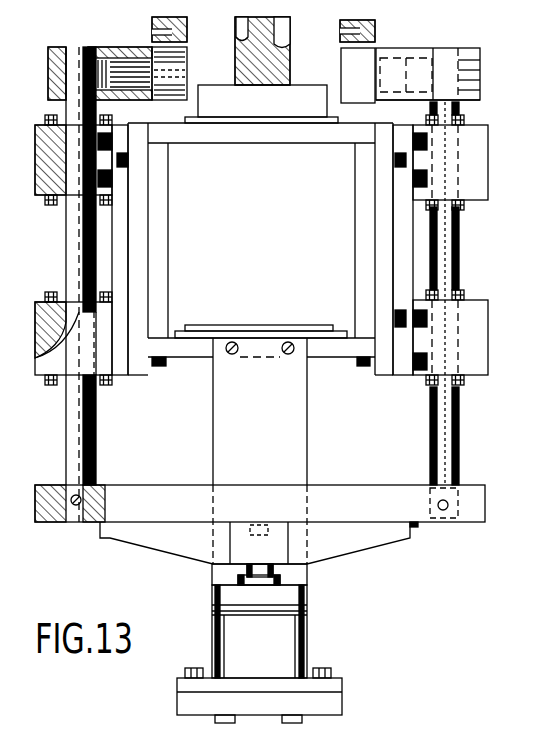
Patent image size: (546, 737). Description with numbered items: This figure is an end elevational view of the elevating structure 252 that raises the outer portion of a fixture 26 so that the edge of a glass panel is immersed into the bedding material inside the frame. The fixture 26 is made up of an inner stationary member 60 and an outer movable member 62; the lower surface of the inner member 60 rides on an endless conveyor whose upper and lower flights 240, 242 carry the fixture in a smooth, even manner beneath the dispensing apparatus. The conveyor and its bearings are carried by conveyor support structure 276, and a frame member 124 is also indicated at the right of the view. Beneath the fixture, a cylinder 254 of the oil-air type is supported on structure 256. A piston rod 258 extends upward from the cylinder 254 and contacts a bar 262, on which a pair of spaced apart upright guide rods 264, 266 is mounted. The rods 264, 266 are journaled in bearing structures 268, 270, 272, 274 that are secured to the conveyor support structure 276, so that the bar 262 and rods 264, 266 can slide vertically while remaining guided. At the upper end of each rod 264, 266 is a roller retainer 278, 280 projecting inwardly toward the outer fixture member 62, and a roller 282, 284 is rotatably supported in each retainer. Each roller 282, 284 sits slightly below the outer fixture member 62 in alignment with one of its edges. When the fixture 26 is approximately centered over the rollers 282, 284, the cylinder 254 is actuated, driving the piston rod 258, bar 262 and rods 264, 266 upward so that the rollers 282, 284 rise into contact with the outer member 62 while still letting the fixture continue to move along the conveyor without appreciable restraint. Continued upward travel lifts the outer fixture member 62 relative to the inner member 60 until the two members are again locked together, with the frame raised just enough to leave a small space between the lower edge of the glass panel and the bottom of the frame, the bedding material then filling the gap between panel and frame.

The fixture 26 is at (386, 40).
The inner stationary member 60 is at (289, 74).
The outer movable member 62 is at (151, 25).
The frame member 124 is at (536, 175).
The upper flight 240 is at (257, 123).
The lower flight 242 is at (213, 328).
The elevating structure 252 is at (178, 565).
The cylinder 254 is at (307, 630).
The support structure 256 is at (327, 682).
The piston rod 258 is at (275, 572).
The bar 262 is at (421, 517).
The guide rod 264 is at (92, 434).
The guide rod 266 is at (458, 432).
The bearing structure 268 is at (43, 200).
The bearing structure 270 is at (482, 147).
The bearing structure 272 is at (42, 302).
The bearing structure 274 is at (482, 325).
The conveyor support structure 276 is at (380, 252).
The roller retainer 278 is at (100, 47).
The roller retainer 280 is at (450, 52).
The roller 282 is at (183, 73).
The roller 284 is at (345, 53).